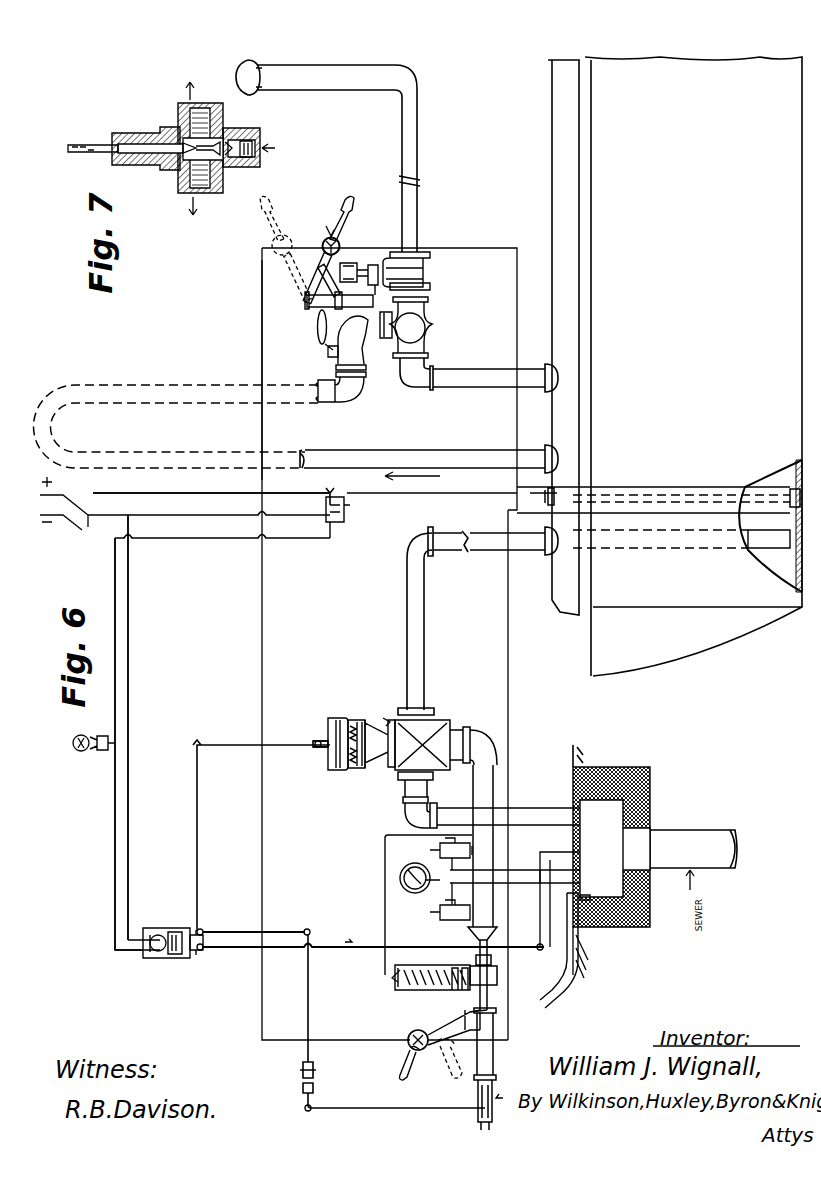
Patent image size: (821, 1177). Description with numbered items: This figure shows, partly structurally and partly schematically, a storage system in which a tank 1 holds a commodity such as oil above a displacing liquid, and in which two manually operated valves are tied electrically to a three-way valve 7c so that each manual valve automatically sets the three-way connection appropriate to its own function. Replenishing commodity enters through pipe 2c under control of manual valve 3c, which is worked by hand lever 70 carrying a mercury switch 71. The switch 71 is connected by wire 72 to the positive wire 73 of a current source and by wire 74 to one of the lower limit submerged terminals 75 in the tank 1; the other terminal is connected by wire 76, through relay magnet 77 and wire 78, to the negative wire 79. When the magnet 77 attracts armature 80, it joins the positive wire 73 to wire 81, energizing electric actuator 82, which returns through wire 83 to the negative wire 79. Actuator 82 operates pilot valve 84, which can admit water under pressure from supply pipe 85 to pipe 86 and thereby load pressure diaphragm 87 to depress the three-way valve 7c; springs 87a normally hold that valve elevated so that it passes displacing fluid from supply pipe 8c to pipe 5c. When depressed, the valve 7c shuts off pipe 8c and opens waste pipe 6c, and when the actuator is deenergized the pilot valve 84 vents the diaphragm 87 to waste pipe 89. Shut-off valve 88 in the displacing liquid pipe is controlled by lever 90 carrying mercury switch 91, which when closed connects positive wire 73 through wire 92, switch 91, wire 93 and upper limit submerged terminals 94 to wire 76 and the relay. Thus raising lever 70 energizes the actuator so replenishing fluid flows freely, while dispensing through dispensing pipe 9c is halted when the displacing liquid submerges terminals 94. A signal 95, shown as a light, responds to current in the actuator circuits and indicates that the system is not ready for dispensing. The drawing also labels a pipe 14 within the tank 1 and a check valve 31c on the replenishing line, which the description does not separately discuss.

In FIG. 6, the tank 1 is at (664, 180).
In FIG. 6, the replenishing fluid pipe 2c is at (418, 128).
In FIG. 6, the manual valve 3c is at (405, 256).
In FIG. 6, the pipe 5c is at (410, 604).
In FIG. 6, the waste pipe 6c is at (438, 822).
In FIG. 6, the three-way valve 7c is at (428, 735).
In FIG. 6, the displacing fluid supply pipe 8c is at (482, 800).
In FIG. 6, the dispensing pipe 9c is at (322, 394).
In FIG. 6, the suction pipe in tank 14 is at (678, 515).
In FIG. 6, the check valve 31c is at (428, 324).
In FIG. 6, the hand lever 70 is at (337, 236).
In FIG. 6, the mercury switch 71 is at (315, 238).
In FIG. 6, the wire 72 is at (262, 355).
In FIG. 6, the positive wire 73 is at (185, 493).
In FIG. 6, the wire 74 is at (513, 248).
In FIG. 6, the lower limit submerged terminals 75 is at (780, 495).
In FIG. 6, the wire 76 is at (662, 487).
In FIG. 6, the relay magnet 77 is at (346, 512).
In FIG. 6, the wire 78 is at (300, 541).
In FIG. 6, the negative wire 79 is at (105, 520).
In FIG. 6, the armature 80 is at (213, 487).
In FIG. 6, the wire 81 is at (203, 518).
In FIG. 6, the electric actuator 82 is at (163, 960).
In FIG. 6, the wire 83 is at (118, 878).
In FIG. 6, the pilot valve 84 is at (204, 932).
In FIG. 7, the pilot valve 84 is at (178, 122).
In FIG. 6, the supply pipe 85 is at (252, 931).
In FIG. 6, the pipe 86 is at (199, 838).
In FIG. 6, the pressure diaphragm 87 is at (332, 722).
In FIG. 6, the springs 87a is at (354, 722).
In FIG. 6, the shut-off valve 88 is at (500, 1030).
In FIG. 6, the waste pipe 89 is at (250, 949).
In FIG. 6, the lever 90 is at (418, 1060).
In FIG. 6, the mercury switch 91 is at (410, 1034).
In FIG. 6, the wire 92 is at (262, 618).
In FIG. 6, the wire 93 is at (508, 598).
In FIG. 6, the upper limit submerged terminals 94 is at (556, 486).
In FIG. 6, the signal 95 is at (86, 752).